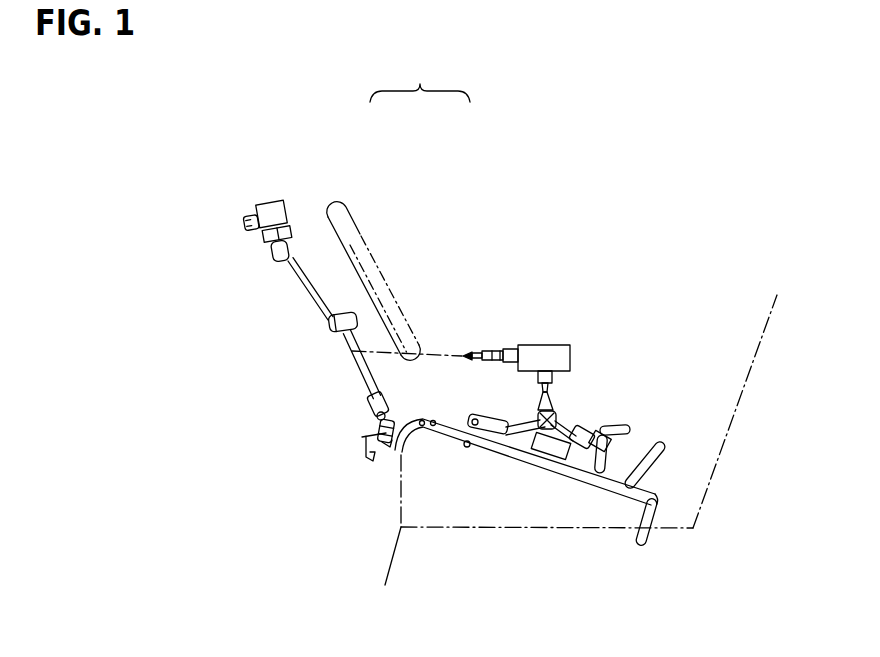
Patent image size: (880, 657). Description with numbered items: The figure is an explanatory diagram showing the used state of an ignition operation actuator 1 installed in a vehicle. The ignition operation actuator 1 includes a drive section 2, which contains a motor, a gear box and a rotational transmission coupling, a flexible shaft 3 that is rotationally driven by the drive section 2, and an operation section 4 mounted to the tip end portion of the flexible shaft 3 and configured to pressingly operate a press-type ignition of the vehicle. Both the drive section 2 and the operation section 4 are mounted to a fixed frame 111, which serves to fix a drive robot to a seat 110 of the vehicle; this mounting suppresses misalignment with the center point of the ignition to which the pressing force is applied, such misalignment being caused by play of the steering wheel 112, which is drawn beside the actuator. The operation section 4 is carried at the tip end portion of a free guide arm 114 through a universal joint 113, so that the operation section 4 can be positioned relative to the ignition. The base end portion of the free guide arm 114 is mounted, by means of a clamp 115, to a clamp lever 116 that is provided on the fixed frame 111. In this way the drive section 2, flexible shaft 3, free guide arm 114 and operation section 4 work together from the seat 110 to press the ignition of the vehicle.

The ignition operation actuator 1 is at (420, 77).
The drive section 2 is at (541, 347).
The flexible shaft 3 is at (448, 351).
The operation section 4 is at (284, 201).
The seat 110 is at (523, 497).
The fixed frame 111 is at (519, 431).
The steering wheel 112 is at (361, 231).
The universal joint 113 is at (265, 241).
The free guide arm 114 is at (357, 350).
The clamp 115 is at (378, 426).
The clamp lever 116 is at (366, 439).